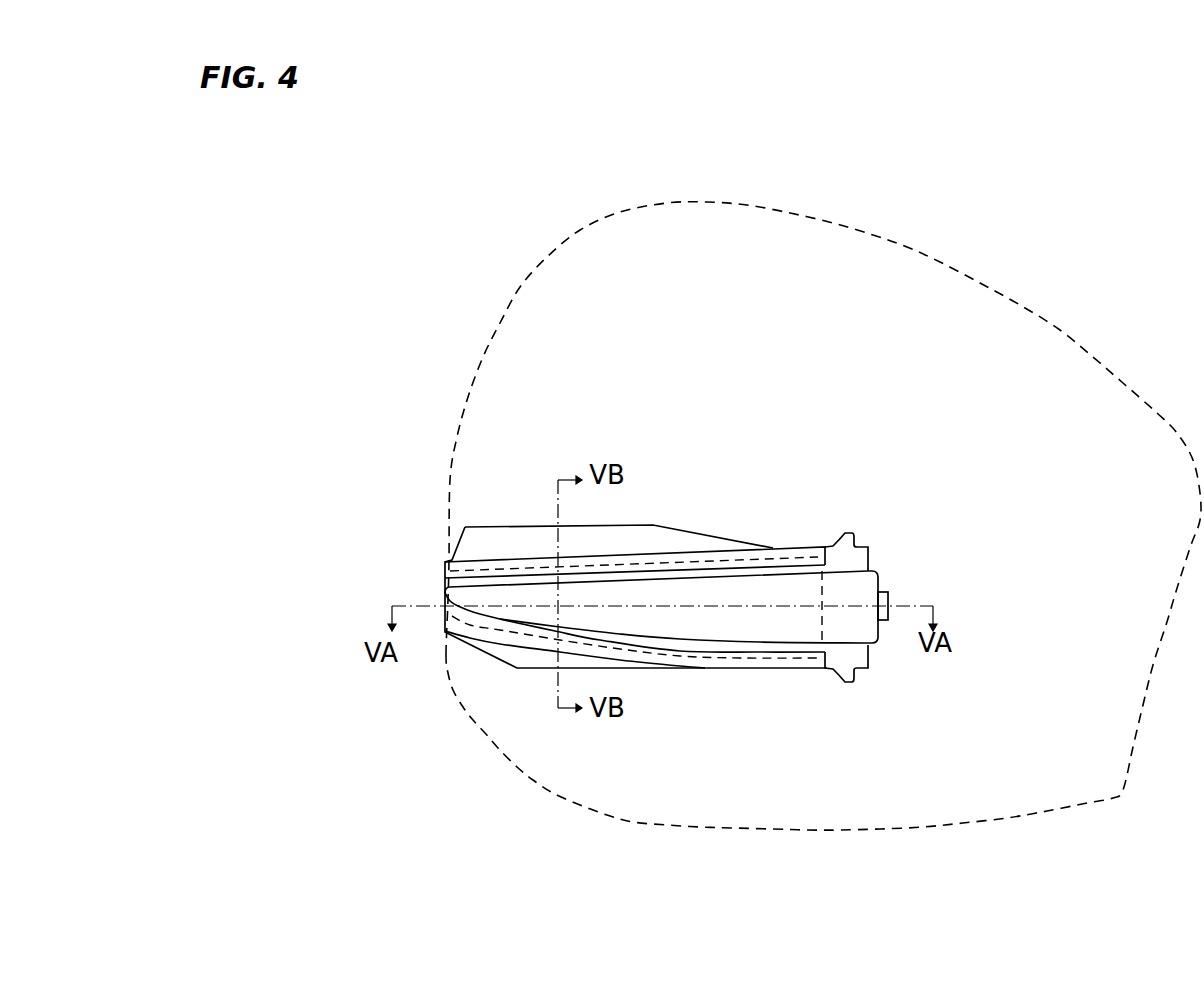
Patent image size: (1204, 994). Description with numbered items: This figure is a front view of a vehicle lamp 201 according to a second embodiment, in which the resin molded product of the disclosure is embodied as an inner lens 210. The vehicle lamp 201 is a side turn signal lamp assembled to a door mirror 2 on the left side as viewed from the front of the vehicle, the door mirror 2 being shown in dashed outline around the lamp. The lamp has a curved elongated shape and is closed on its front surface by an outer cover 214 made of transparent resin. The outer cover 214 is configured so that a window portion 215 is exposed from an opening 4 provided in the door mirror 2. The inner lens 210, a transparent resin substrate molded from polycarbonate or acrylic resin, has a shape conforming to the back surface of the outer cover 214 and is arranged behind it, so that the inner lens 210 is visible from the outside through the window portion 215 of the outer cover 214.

The door mirror 2 is at (872, 232).
The vehicle lamp 201 is at (500, 552).
The inner lens 210 is at (663, 627).
The outer cover 214 is at (516, 621).
The window portion 215 is at (518, 630).
The opening 4 is at (766, 647).